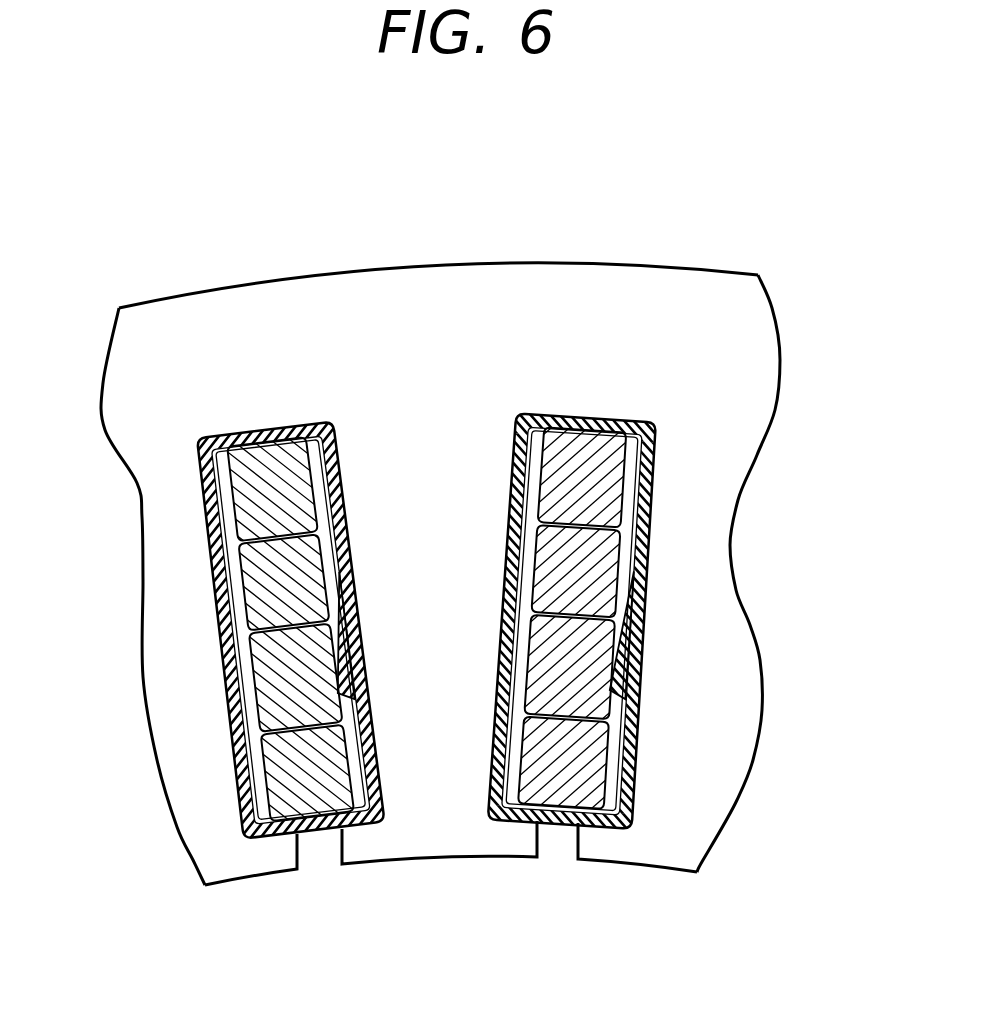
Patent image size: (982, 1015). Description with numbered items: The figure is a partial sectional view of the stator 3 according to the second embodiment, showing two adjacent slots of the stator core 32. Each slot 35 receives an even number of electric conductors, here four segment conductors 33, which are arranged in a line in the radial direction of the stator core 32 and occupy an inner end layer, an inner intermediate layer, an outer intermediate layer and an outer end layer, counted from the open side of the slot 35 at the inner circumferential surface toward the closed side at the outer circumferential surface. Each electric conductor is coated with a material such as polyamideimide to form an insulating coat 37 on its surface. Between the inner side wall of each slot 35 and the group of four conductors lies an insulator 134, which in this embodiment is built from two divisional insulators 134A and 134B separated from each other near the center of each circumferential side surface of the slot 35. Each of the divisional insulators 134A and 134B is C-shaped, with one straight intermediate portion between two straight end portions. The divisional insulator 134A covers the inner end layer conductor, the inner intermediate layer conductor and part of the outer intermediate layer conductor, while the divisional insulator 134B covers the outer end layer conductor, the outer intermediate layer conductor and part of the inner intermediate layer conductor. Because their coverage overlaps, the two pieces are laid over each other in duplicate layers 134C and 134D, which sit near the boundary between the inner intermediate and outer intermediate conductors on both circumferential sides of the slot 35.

The stator 3 is at (459, 484).
The stator core 32 is at (483, 300).
The segment conductors 33 is at (613, 485).
The slot 35 is at (638, 668).
The insulating coat 37 is at (238, 505).
The insulator 134 is at (491, 622).
The divisional insulator 134A is at (548, 827).
The divisional insulator 134B is at (588, 410).
The duplicate layer 134C is at (653, 611).
The duplicate layer 134D is at (495, 593).